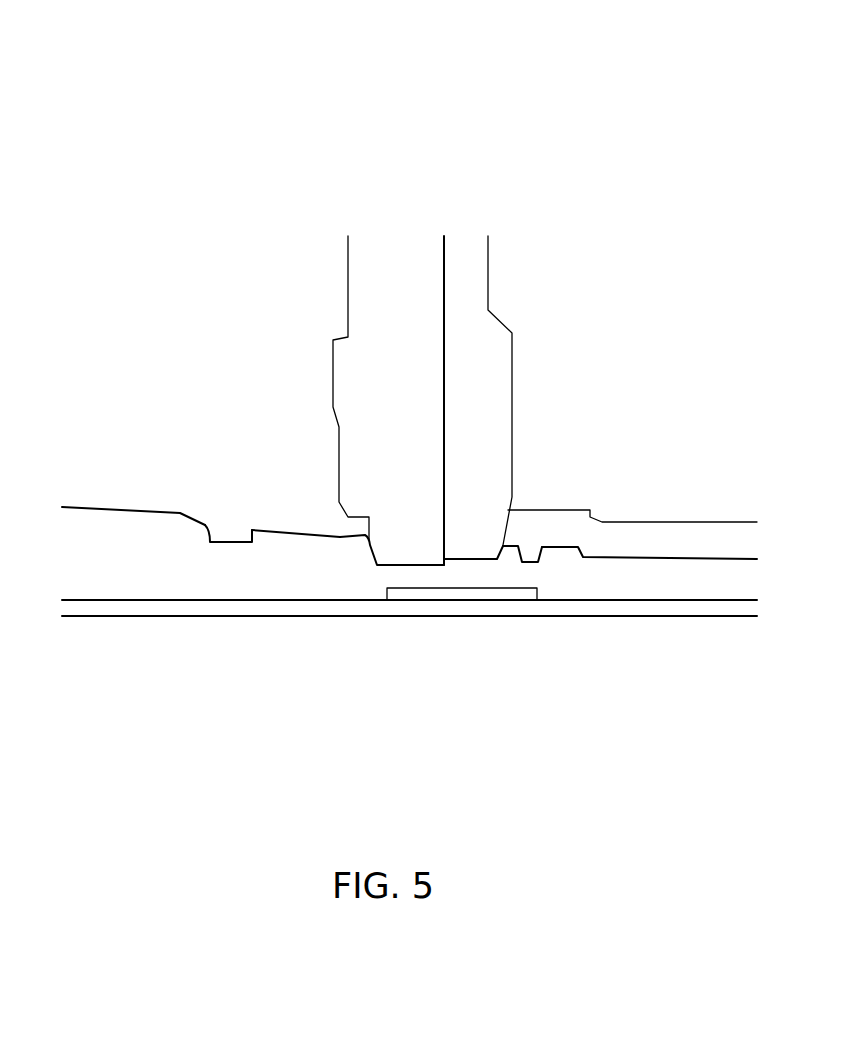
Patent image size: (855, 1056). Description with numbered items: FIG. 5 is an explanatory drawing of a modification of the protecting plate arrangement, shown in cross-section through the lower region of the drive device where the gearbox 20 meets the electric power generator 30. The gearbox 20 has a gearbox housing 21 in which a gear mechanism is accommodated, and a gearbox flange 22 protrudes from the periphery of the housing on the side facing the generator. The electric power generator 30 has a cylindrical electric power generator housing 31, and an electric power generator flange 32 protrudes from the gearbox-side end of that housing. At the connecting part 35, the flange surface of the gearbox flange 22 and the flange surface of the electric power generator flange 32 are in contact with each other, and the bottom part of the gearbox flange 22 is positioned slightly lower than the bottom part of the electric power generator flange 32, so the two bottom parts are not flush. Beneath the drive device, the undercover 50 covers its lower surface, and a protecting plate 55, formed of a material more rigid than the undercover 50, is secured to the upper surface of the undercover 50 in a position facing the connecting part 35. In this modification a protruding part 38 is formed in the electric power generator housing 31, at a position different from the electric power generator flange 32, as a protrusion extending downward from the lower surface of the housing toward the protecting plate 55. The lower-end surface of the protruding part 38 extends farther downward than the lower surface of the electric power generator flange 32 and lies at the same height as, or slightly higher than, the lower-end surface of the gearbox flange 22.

The gearbox 20 is at (308, 517).
The gearbox housing 21 is at (232, 542).
The gearbox flange 22 is at (392, 300).
The electric power generator 30 is at (663, 533).
The electric power generator housing 31 is at (685, 562).
The electric power generator flange 32 is at (467, 300).
The connecting part 35 is at (444, 236).
The protruding part 38 is at (533, 552).
The undercover 50 is at (147, 612).
The protecting plate 55 is at (533, 592).